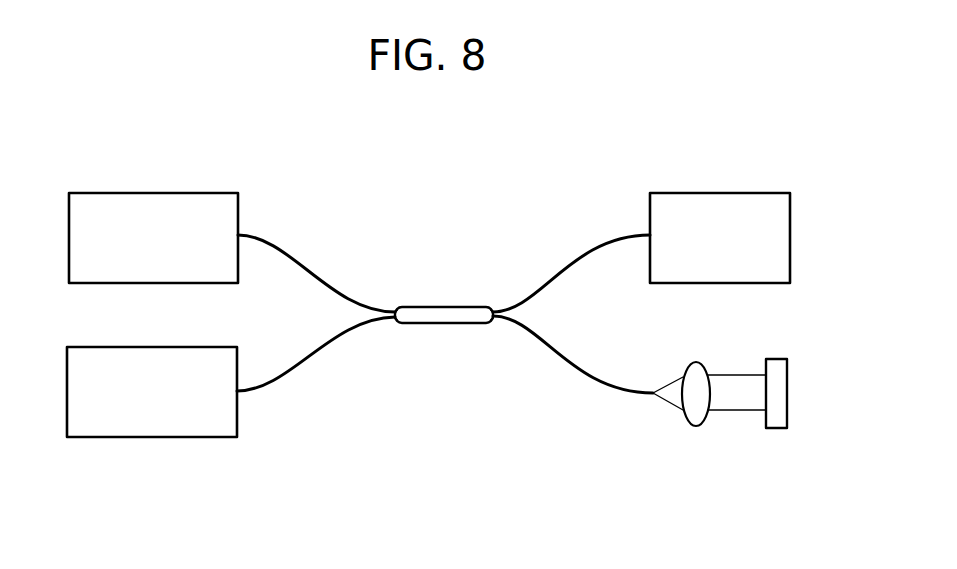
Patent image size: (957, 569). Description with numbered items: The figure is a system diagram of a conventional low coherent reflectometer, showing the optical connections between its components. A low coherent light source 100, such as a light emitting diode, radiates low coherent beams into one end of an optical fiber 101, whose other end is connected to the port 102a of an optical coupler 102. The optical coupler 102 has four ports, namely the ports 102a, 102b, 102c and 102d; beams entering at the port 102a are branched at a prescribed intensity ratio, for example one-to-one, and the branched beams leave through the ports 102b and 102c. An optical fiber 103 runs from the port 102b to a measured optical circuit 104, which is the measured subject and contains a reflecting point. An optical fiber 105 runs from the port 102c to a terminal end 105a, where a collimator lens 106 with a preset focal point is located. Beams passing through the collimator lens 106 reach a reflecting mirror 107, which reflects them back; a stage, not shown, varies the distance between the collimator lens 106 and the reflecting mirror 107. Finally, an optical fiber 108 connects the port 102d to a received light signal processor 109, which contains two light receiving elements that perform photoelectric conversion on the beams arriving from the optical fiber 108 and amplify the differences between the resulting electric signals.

The low coherent light source 100 is at (138, 193).
The optical fiber 101 is at (303, 252).
The optical coupler 102 is at (442, 307).
The port 102a is at (395, 311).
The port 102b is at (493, 311).
The port 102c is at (493, 320).
The port 102d is at (395, 319).
The optical fiber 103 is at (560, 268).
The measured optical circuit 104 is at (690, 193).
The optical fiber 105 is at (573, 377).
The terminal end 105a is at (655, 402).
The collimator lens 106 is at (698, 362).
The reflecting mirror 107 is at (778, 359).
The optical fiber 108 is at (302, 372).
The received light signal processor 109 is at (137, 347).